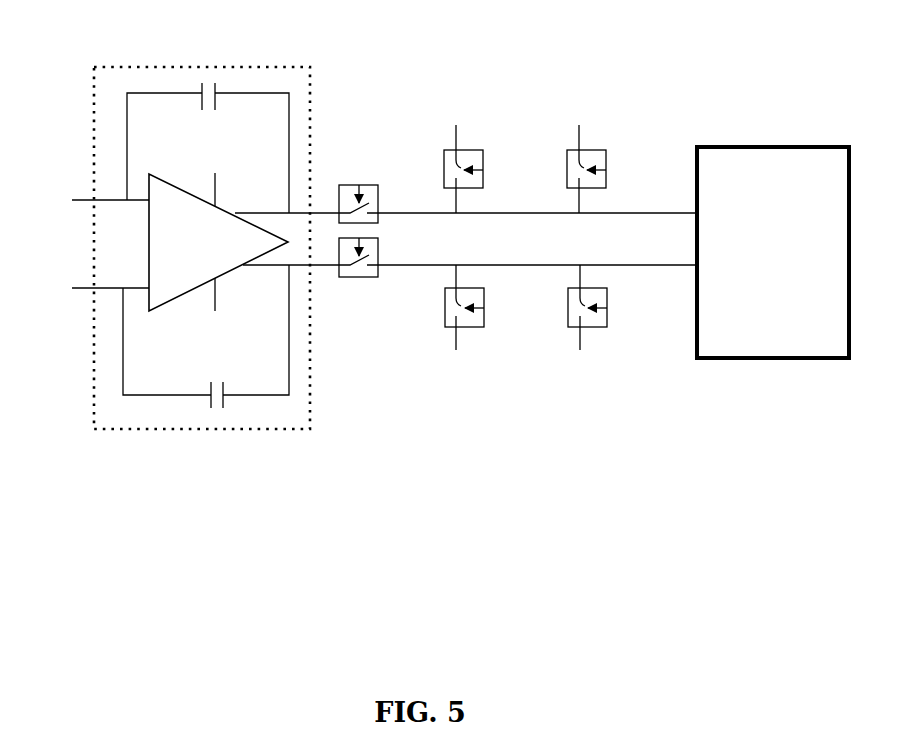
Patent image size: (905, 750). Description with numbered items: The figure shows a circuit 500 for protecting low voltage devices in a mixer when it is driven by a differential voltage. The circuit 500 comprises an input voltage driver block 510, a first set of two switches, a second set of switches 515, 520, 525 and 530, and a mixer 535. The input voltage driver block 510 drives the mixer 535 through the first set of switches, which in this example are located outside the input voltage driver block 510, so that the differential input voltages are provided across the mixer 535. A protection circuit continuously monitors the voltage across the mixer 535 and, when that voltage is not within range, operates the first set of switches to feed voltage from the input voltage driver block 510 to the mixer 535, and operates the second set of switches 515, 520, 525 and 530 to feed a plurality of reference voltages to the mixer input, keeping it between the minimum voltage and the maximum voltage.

The circuit 500 is at (130, 474).
The input voltage driver block 510 is at (178, 66).
The switch of second set of switches 515 is at (462, 150).
The switch of second set of switches 520 is at (600, 150).
The switch of second set of switches 525 is at (485, 299).
The switch of second set of switches 530 is at (607, 299).
The mixer 535 is at (784, 146).